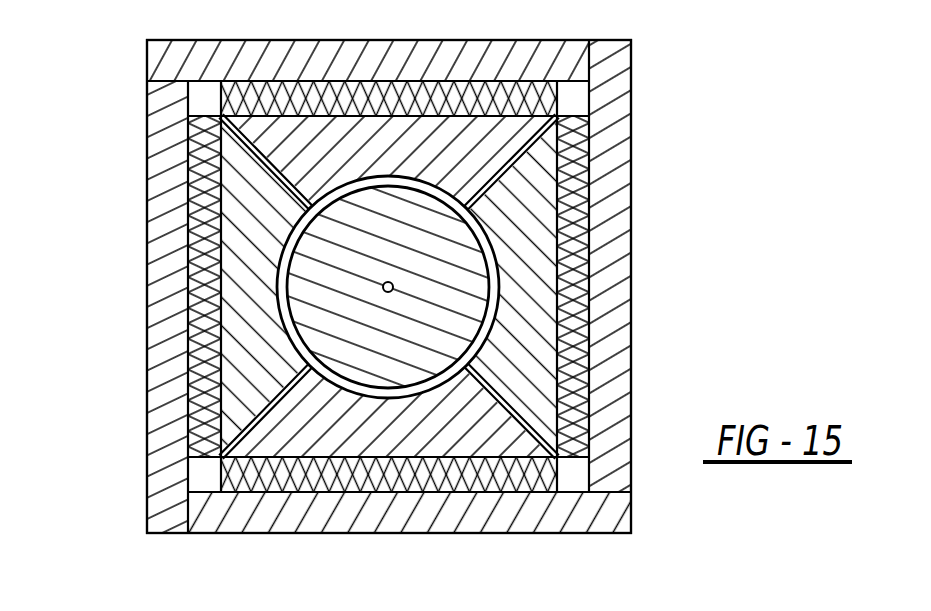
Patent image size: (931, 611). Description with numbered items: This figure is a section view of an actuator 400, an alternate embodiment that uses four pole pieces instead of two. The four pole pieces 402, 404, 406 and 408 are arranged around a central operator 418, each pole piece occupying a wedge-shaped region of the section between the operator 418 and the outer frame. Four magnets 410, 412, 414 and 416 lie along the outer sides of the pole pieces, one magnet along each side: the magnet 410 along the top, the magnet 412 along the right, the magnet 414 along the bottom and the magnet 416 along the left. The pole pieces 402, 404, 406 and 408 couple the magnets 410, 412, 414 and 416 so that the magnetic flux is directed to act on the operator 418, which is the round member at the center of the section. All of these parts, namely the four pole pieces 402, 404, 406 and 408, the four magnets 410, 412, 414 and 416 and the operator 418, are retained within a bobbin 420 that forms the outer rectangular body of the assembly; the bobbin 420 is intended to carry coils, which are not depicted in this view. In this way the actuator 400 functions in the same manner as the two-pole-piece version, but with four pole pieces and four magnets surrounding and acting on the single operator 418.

The actuator 400 is at (686, 176).
The pole piece 402 is at (505, 142).
The pole piece 404 is at (520, 333).
The pole piece 406 is at (460, 422).
The pole piece 408 is at (250, 315).
The magnet 410 is at (502, 95).
The magnet 412 is at (573, 267).
The magnet 414 is at (332, 478).
The magnet 416 is at (203, 379).
The operator 418 is at (332, 250).
The bobbin 420 is at (162, 492).